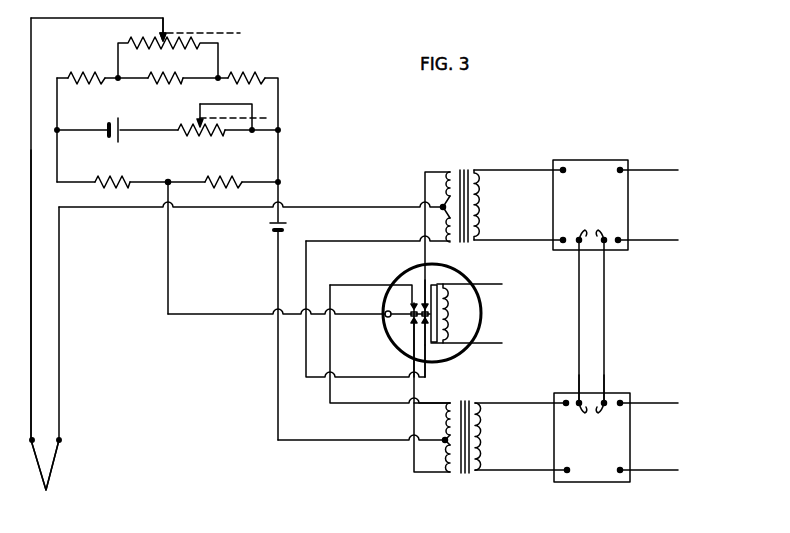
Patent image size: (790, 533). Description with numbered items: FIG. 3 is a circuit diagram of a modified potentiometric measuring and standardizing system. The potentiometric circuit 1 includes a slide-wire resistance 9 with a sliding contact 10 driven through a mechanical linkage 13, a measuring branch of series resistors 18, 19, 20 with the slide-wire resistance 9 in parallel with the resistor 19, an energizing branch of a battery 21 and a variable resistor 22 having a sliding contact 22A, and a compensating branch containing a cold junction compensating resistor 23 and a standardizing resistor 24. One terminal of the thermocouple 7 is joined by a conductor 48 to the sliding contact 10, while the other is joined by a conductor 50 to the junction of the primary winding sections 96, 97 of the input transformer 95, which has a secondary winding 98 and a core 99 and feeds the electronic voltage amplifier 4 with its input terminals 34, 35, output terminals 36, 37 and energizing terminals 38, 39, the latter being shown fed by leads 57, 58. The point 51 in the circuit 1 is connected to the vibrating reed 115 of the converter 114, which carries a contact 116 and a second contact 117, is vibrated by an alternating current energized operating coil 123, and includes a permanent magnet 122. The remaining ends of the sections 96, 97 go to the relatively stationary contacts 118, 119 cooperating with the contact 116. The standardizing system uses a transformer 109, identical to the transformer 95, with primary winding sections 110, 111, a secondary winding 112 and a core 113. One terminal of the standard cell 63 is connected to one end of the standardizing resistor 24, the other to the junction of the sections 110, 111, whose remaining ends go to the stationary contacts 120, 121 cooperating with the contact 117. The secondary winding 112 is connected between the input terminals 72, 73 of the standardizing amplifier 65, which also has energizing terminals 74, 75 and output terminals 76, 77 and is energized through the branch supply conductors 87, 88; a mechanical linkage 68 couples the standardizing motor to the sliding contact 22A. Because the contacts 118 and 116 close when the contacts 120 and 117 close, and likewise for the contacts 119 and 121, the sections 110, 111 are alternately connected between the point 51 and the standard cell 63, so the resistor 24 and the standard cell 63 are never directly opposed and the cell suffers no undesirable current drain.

The potentiometric circuit 1 is at (317, 73).
The electronic voltage amplifier 4 is at (599, 195).
The thermocouple 7 is at (56, 462).
The slide-wire resistance 9 is at (133, 42).
The sliding contact 10 is at (165, 22).
The mechanical linkage 13 is at (229, 20).
The resistor 18 is at (75, 73).
The resistor 19 is at (165, 75).
The resistor 20 is at (252, 78).
The battery 21 is at (112, 122).
The variable resistor 22 is at (205, 132).
The sliding contact 22A is at (199, 120).
The thermocouple cold junction compensating resistor 23 is at (114, 181).
The standardizing resistor 24 is at (229, 181).
The input terminal 34 is at (563, 170).
The input terminal 35 is at (563, 240).
The output terminal 36 is at (620, 172).
The output terminal 37 is at (618, 240).
The energizing terminal 38 is at (572, 230).
The energizing terminal 39 is at (608, 230).
The conductor 48 is at (32, 216).
The conductor 50 is at (107, 208).
The point 51 is at (173, 171).
The conductor 57 is at (579, 280).
The conductor 58 is at (604, 280).
The standard cell 63 is at (287, 226).
The electronic voltage amplifier 65 is at (602, 447).
The mechanical linkage 68 is at (276, 104).
The input terminal 72 is at (566, 403).
The input terminal 73 is at (567, 470).
The energizing terminal 74 is at (573, 415).
The energizing terminal 75 is at (612, 415).
The output terminal 76 is at (620, 403).
The output terminal 77 is at (620, 470).
The branch supply conductor 87 is at (579, 378).
The branch supply conductor 88 is at (604, 388).
The transformer 95 is at (451, 237).
The primary winding section 96 is at (447, 181).
The primary winding section 97 is at (450, 223).
The secondary winding 98 is at (477, 216).
The core 99 is at (467, 172).
The transformer 109 is at (473, 457).
The primary winding section 110 is at (452, 415).
The primary winding section 111 is at (450, 458).
The secondary winding 112 is at (478, 450).
The core 113 is at (471, 404).
The converter 114 is at (466, 315).
The vibrating reed 115 is at (408, 310).
The contact 116 is at (446, 343).
The second contact 117 is at (410, 318).
The relatively stationary contact 118 is at (427, 281).
The relatively stationary contact 119 is at (426, 356).
The relatively stationary contact 120 is at (412, 288).
The relatively stationary contact 121 is at (411, 327).
The permanent magnet 122 is at (448, 284).
The operating coil 123 is at (455, 315).